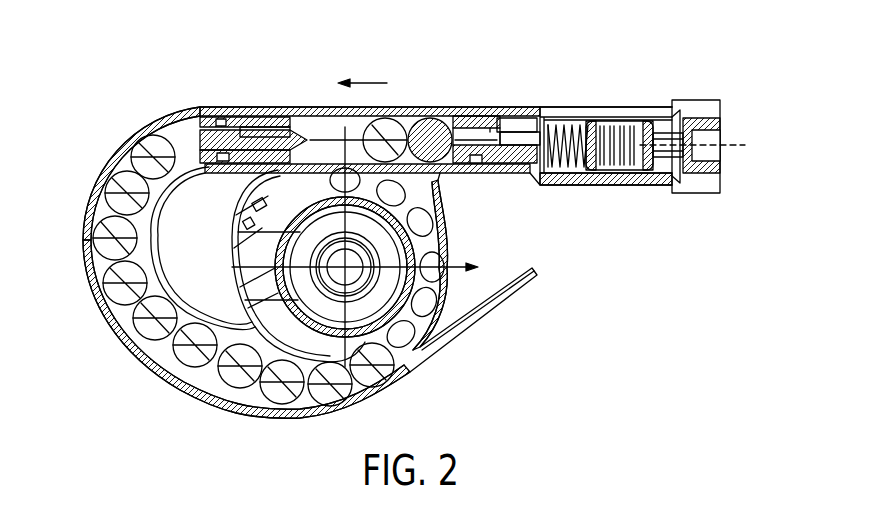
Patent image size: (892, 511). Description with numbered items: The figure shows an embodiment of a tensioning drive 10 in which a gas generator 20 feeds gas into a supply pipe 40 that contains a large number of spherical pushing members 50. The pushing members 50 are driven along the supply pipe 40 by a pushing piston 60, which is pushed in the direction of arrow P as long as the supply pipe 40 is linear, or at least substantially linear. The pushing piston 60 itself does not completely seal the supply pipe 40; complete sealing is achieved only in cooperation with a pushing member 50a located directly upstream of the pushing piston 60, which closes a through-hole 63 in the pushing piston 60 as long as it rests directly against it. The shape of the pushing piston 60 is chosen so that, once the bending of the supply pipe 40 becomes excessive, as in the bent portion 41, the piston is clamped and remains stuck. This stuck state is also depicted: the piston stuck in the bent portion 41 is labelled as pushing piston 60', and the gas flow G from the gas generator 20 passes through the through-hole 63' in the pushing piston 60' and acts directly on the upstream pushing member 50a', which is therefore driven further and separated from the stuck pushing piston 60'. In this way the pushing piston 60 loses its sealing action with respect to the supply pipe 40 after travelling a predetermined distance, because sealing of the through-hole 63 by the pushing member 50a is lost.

The tensioning drive 10 is at (742, 78).
The gas generator 20 is at (634, 112).
The supply pipe 40 is at (569, 108).
The bent portion 41 is at (158, 118).
The spherical pushing members 50 is at (82, 229).
The pushing member 50a is at (434, 119).
The pushing member 50a' is at (126, 154).
The pushing piston 60 is at (501, 111).
The pushing piston 60' is at (281, 108).
The through-hole 63 is at (495, 120).
The through-hole 63' is at (245, 116).
The gas flow G is at (186, 121).
The arrow P is at (371, 82).